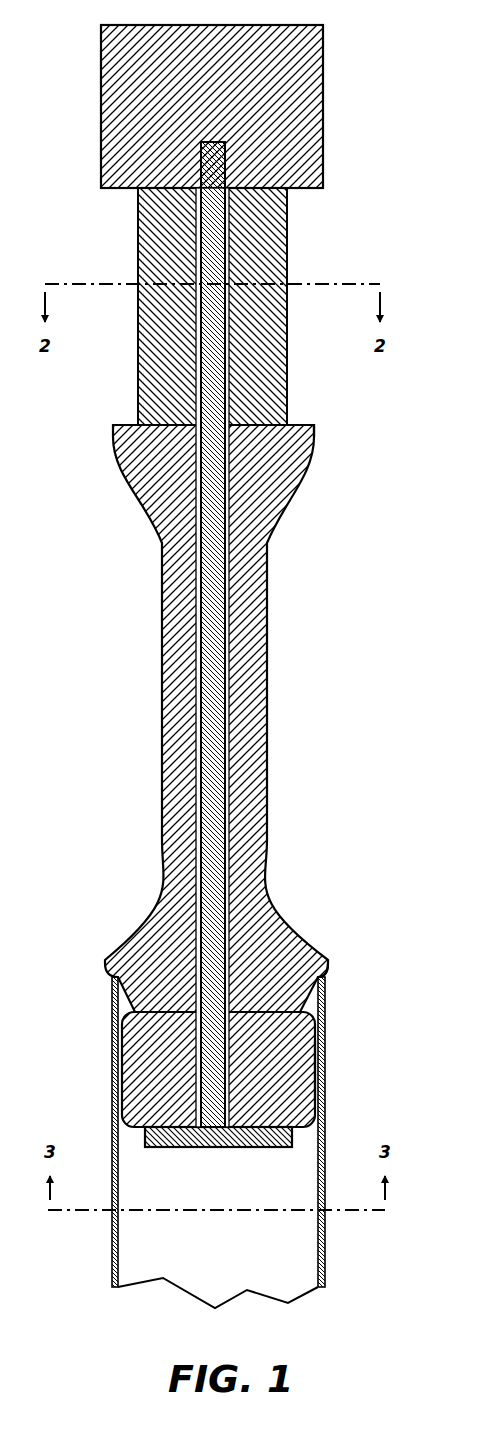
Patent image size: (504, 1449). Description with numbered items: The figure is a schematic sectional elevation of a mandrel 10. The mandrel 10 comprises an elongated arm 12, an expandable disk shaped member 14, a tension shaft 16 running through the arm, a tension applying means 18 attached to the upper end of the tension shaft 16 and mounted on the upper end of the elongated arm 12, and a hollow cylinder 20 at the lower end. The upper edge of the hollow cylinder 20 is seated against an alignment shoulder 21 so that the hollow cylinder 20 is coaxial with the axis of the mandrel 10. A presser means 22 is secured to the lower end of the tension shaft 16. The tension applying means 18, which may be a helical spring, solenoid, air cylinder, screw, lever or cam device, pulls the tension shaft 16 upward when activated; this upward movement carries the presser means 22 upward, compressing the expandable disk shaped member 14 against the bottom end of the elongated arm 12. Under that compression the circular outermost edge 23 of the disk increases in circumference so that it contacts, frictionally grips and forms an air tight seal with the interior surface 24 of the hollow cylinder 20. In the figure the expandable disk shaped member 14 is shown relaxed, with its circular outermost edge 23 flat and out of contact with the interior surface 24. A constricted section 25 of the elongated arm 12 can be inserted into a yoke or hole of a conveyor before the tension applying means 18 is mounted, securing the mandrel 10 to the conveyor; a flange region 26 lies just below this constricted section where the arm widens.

The mandrel 10 is at (452, 187).
The elongated arm 12 is at (257, 573).
The expandable disk shaped member 14 is at (130, 1070).
The tension shaft 16 is at (215, 603).
The tension applying means 18 is at (323, 107).
The hollow cylinder 20 is at (325, 1068).
The alignment shoulder 21 is at (327, 977).
The presser means 22 is at (233, 1147).
The circular outermost edge 23 is at (320, 1085).
The interior surface 24 is at (317, 1253).
The constricted section 25 is at (287, 266).
The flange 26 is at (290, 425).